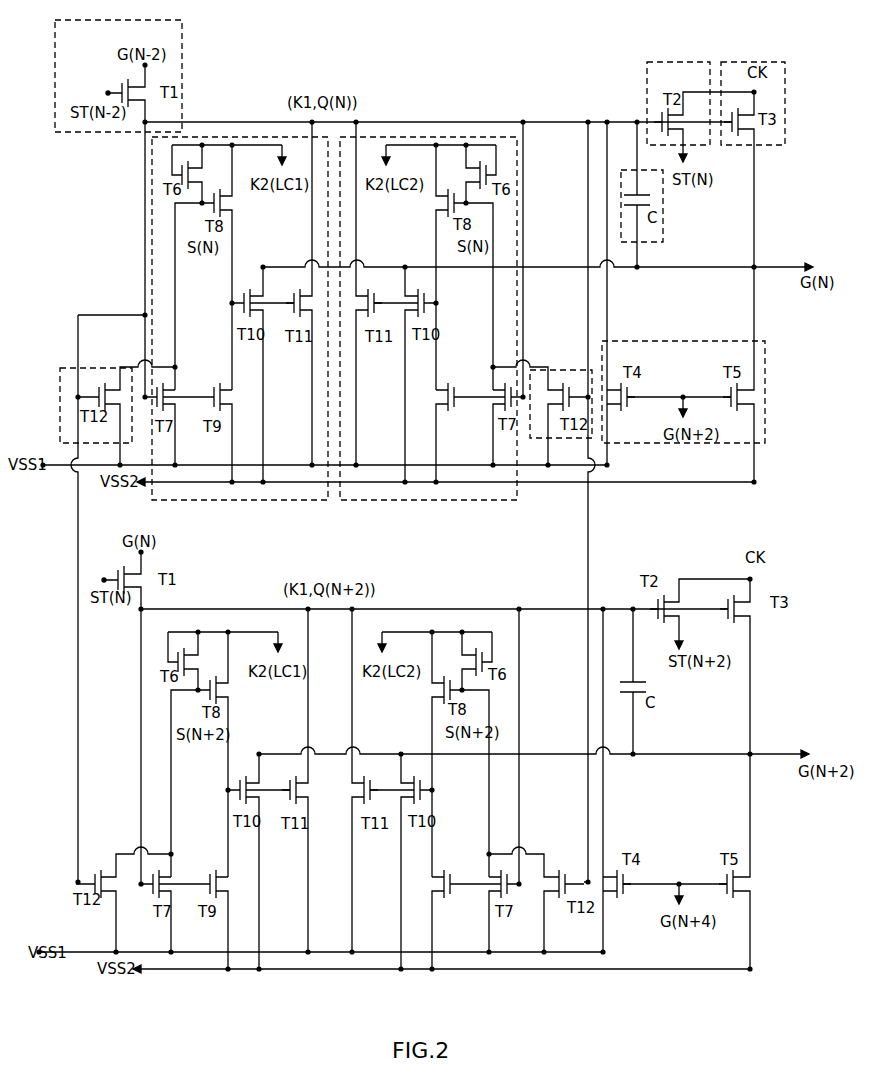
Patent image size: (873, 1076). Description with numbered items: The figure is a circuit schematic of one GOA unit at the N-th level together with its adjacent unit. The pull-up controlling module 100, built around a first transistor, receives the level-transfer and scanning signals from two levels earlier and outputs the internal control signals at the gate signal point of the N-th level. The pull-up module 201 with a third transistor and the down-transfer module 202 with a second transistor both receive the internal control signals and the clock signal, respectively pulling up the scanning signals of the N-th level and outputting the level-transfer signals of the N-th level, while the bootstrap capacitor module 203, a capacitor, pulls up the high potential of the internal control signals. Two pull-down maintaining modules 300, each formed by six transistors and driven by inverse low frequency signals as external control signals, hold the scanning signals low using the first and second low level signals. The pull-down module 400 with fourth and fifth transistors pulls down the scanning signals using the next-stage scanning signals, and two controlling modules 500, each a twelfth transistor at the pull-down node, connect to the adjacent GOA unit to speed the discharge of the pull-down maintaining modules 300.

The pull-up controlling module 100 is at (183, 52).
The pull-up module 201 is at (747, 62).
The down-transfer module 202 is at (674, 62).
The bootstrap capacitor module 203 is at (665, 227).
The pull-down maintaining module 300 is at (222, 138).
The pull-down module 400 is at (768, 356).
The controlling module 500 is at (102, 368).